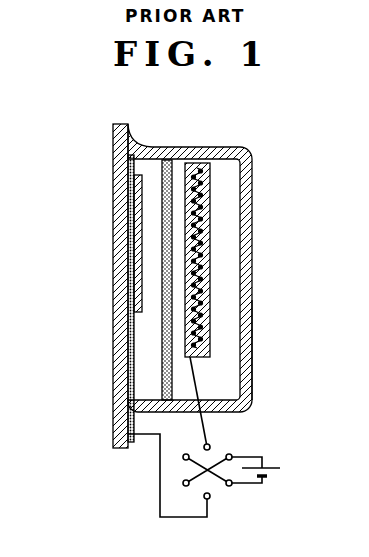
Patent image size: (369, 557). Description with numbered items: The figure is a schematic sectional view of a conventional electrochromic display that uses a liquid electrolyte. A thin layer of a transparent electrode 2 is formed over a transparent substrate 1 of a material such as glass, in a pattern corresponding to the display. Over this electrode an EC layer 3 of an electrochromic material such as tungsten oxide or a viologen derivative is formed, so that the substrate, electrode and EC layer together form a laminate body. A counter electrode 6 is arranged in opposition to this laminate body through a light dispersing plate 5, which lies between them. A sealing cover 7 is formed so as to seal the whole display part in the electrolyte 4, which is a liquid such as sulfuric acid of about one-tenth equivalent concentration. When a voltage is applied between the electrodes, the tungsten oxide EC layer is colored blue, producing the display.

The transparent substrate 1 is at (117, 233).
The transparent electrode 2 is at (134, 372).
The EC layer 3 is at (140, 287).
The electrolyte 4 is at (222, 218).
The light dispersing plate 5 is at (164, 177).
The counter electrode 6 is at (210, 294).
The sealing cover 7 is at (252, 383).